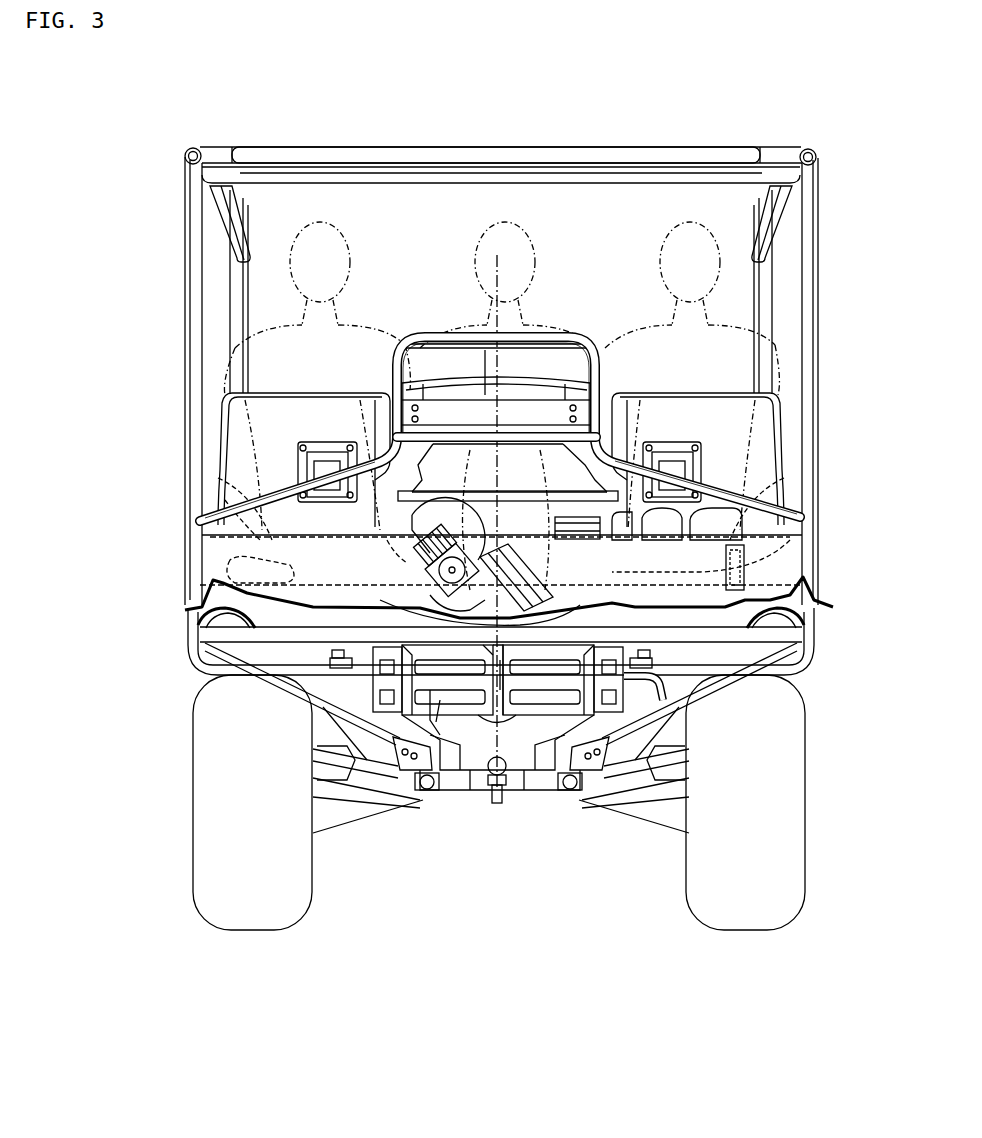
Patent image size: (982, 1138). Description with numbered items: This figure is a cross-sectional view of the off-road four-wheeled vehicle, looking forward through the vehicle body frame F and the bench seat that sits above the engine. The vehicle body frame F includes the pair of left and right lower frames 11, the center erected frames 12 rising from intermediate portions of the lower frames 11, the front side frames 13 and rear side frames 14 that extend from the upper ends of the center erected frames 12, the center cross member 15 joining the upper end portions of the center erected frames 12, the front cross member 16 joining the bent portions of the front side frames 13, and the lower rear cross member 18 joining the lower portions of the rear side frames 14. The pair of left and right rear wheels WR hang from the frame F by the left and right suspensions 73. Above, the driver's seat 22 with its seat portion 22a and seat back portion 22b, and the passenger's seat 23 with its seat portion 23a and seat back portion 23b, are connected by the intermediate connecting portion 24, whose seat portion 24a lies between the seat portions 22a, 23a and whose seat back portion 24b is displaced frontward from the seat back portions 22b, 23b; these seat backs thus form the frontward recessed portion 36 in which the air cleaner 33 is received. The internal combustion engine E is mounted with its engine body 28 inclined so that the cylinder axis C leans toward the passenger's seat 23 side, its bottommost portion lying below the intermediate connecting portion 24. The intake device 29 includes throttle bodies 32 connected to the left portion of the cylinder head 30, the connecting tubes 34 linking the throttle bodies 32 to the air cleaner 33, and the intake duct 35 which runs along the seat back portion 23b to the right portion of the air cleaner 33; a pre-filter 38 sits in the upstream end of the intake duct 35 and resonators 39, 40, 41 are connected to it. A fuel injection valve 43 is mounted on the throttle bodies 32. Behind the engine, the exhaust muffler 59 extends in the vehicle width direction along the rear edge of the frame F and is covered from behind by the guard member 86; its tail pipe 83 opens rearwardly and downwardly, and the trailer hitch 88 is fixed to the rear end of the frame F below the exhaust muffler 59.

The lower frames 11 is at (197, 633).
The center erected frames 12 is at (185, 340).
The front side frames 13 is at (238, 290).
The rear side frames 14 is at (193, 147).
The center cross member 15 is at (445, 147).
The front cross member 16 is at (640, 173).
The lower rear cross member 18 is at (298, 636).
The driver's seat 22 is at (269, 457).
The seat portion 22a is at (218, 478).
The seat back portion 22b is at (305, 412).
The passenger's seat 23 is at (750, 467).
The seat portion 23a is at (745, 566).
The seat back portion 23b is at (688, 410).
The intermediate connecting portion 24 is at (528, 376).
The seat portion 24a is at (612, 458).
The seat back portion 24b is at (510, 392).
The engine body 28 is at (513, 545).
The intake device 29 is at (512, 432).
The cylinder head 30 is at (482, 535).
The throttle bodies 32 is at (400, 648).
The air cleaner 33 is at (435, 470).
The connecting tubes 34 is at (308, 480).
The intake duct 35 is at (675, 627).
The recessed portion 36 is at (486, 392).
The pre-filter 38 is at (760, 538).
The resonator 39 is at (638, 525).
The resonator 40 is at (668, 522).
The resonator 41 is at (710, 517).
The fuel injection valve 43 is at (424, 521).
The exhaust muffler 59 is at (266, 576).
The suspensions 73 is at (357, 757).
The tail pipe 83 is at (695, 678).
The guard member 86 is at (473, 700).
The trailer hitch 88 is at (503, 768).
The cylinder axis C is at (535, 508).
The internal combustion engine E is at (440, 598).
The vehicle body frame F is at (180, 646).
The rear wheels WR is at (206, 796).